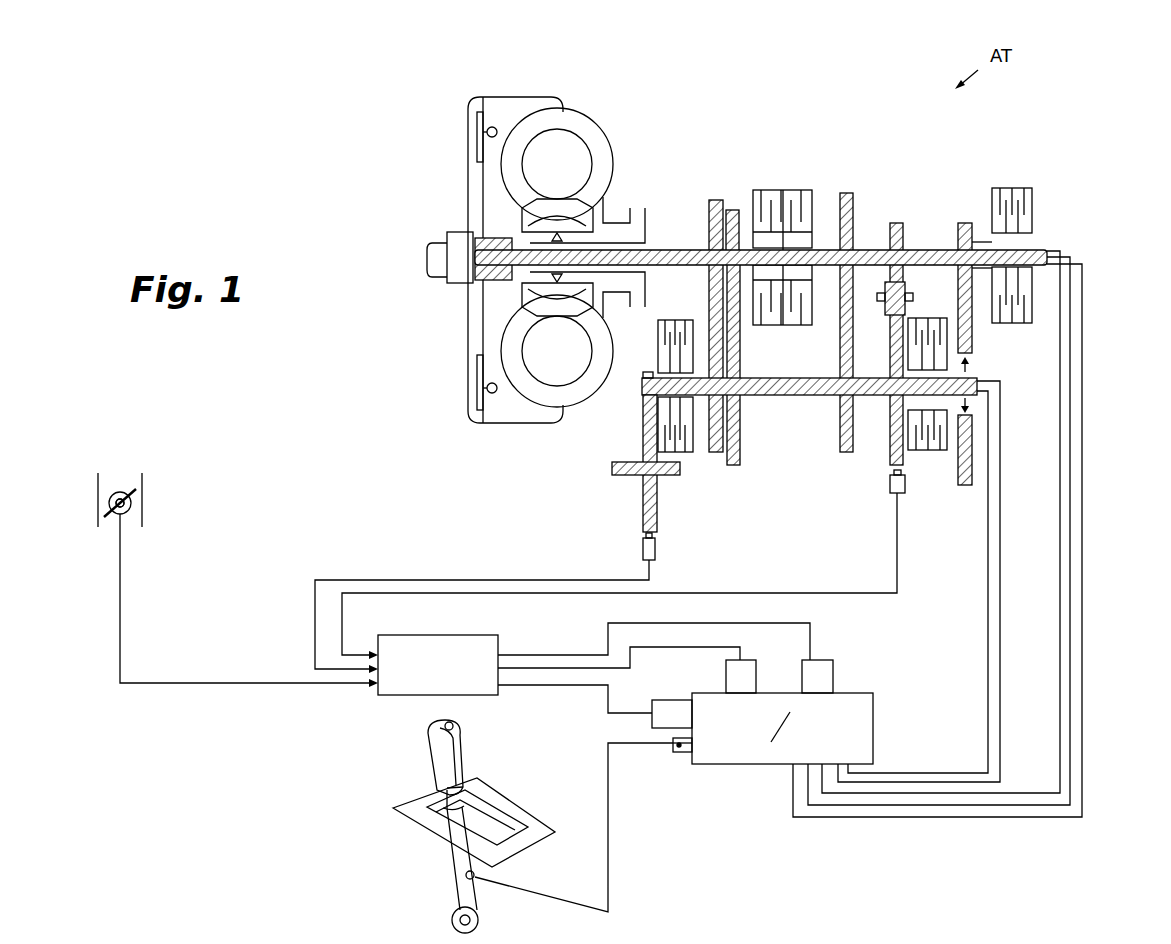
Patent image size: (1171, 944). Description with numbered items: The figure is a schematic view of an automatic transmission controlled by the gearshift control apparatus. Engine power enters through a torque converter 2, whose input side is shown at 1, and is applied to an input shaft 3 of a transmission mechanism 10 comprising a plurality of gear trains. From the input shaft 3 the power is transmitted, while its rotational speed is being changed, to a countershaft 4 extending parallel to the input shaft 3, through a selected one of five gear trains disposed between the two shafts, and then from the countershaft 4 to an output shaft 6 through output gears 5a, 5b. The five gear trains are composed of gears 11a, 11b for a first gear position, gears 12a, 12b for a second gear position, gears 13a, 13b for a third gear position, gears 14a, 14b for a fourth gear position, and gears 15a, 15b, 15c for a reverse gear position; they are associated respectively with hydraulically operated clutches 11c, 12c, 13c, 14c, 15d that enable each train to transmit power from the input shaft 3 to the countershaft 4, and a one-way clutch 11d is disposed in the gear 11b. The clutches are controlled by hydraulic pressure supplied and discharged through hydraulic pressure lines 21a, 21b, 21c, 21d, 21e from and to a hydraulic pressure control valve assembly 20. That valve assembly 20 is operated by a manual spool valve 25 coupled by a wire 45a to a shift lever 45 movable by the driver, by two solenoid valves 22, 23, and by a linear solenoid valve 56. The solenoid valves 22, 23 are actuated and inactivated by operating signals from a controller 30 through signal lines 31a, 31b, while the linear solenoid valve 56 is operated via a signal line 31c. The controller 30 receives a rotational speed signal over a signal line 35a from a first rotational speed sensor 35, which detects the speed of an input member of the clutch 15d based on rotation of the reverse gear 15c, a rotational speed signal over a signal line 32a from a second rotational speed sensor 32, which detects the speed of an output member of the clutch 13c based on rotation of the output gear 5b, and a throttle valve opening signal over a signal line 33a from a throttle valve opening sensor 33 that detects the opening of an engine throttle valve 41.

The input shaft 1 is at (430, 278).
The torque converter 2 is at (594, 106).
The input shaft 3 is at (670, 250).
The countershaft 4 is at (795, 395).
The output gear 5a is at (643, 380).
The output gear 5b is at (643, 425).
The output shaft 6 is at (625, 475).
The transmission mechanism 10 is at (782, 232).
The gear 11a is at (961, 223).
The gear 11b is at (972, 345).
The hydraulically operated clutch 11c is at (1013, 188).
The one-way clutch 11d is at (968, 372).
The gear 12a is at (733, 210).
The gear 12b is at (740, 455).
The hydraulically operated clutch 12c is at (758, 325).
The gear 13a is at (712, 200).
The gear 13b is at (716, 452).
The hydraulically operated clutch 13c is at (690, 452).
The gear 14a is at (853, 317).
The gear 14b is at (846, 452).
The hydraulically operated clutch 14c is at (847, 193).
The gear 15a is at (894, 223).
The gear 15b is at (908, 292).
The reverse gear 15c is at (890, 457).
The hydraulically operated clutch 15d is at (920, 450).
The hydraulic pressure control valve assembly 20 is at (873, 715).
The hydraulic pressure line 21a is at (905, 773).
The hydraulic pressure line 21b is at (1000, 745).
The hydraulic pressure line 21c is at (1060, 692).
The hydraulic pressure line 21d is at (1082, 668).
The hydraulic pressure line 21e is at (1082, 730).
The solenoid valve 22 is at (752, 661).
The solenoid valve 23 is at (832, 661).
The manual spool valve 25 is at (682, 752).
The controller 30 is at (455, 635).
The signal line 31a is at (545, 655).
The signal line 31b is at (515, 670).
The signal line 31c is at (570, 686).
The second rotational speed sensor 32 is at (655, 548).
The signal line 32a is at (575, 580).
The throttle valve opening sensor 33 is at (115, 516).
The signal line 33a is at (120, 612).
The first rotational speed sensor 35 is at (890, 485).
The signal line 35a is at (750, 593).
The engine throttle valve 41 is at (130, 492).
The shift lever 45 is at (455, 765).
The wire 45a is at (612, 785).
The linear solenoid valve 56 is at (672, 700).